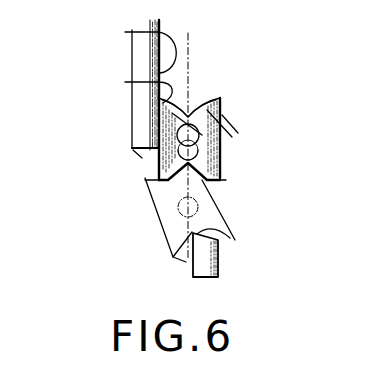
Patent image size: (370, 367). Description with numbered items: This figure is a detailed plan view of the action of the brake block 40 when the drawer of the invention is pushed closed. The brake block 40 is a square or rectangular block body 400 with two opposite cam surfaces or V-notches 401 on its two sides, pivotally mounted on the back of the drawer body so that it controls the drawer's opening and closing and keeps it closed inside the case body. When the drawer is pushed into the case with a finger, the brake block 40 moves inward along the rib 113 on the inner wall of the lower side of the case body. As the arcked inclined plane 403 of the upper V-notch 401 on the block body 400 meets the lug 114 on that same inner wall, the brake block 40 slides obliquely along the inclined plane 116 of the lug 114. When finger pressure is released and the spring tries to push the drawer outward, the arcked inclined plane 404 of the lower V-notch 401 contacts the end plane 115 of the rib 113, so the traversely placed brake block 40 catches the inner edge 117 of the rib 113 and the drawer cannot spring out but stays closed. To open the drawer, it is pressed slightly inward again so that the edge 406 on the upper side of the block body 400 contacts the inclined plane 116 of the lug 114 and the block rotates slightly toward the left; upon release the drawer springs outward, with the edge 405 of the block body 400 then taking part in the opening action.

The brake block 40 is at (223, 99).
The rib 113 is at (136, 126).
The lug 114 is at (218, 263).
The end plane 115 is at (147, 152).
The inclined plane 116 is at (229, 238).
The inner edge 117 is at (132, 32).
The block body 400 is at (221, 100).
The V-notch 401 is at (201, 95).
The arcked inclined plane 403 is at (220, 200).
The arcked inclined plane 404 is at (158, 82).
The edge 405 is at (200, 135).
The edge 406 is at (157, 170).